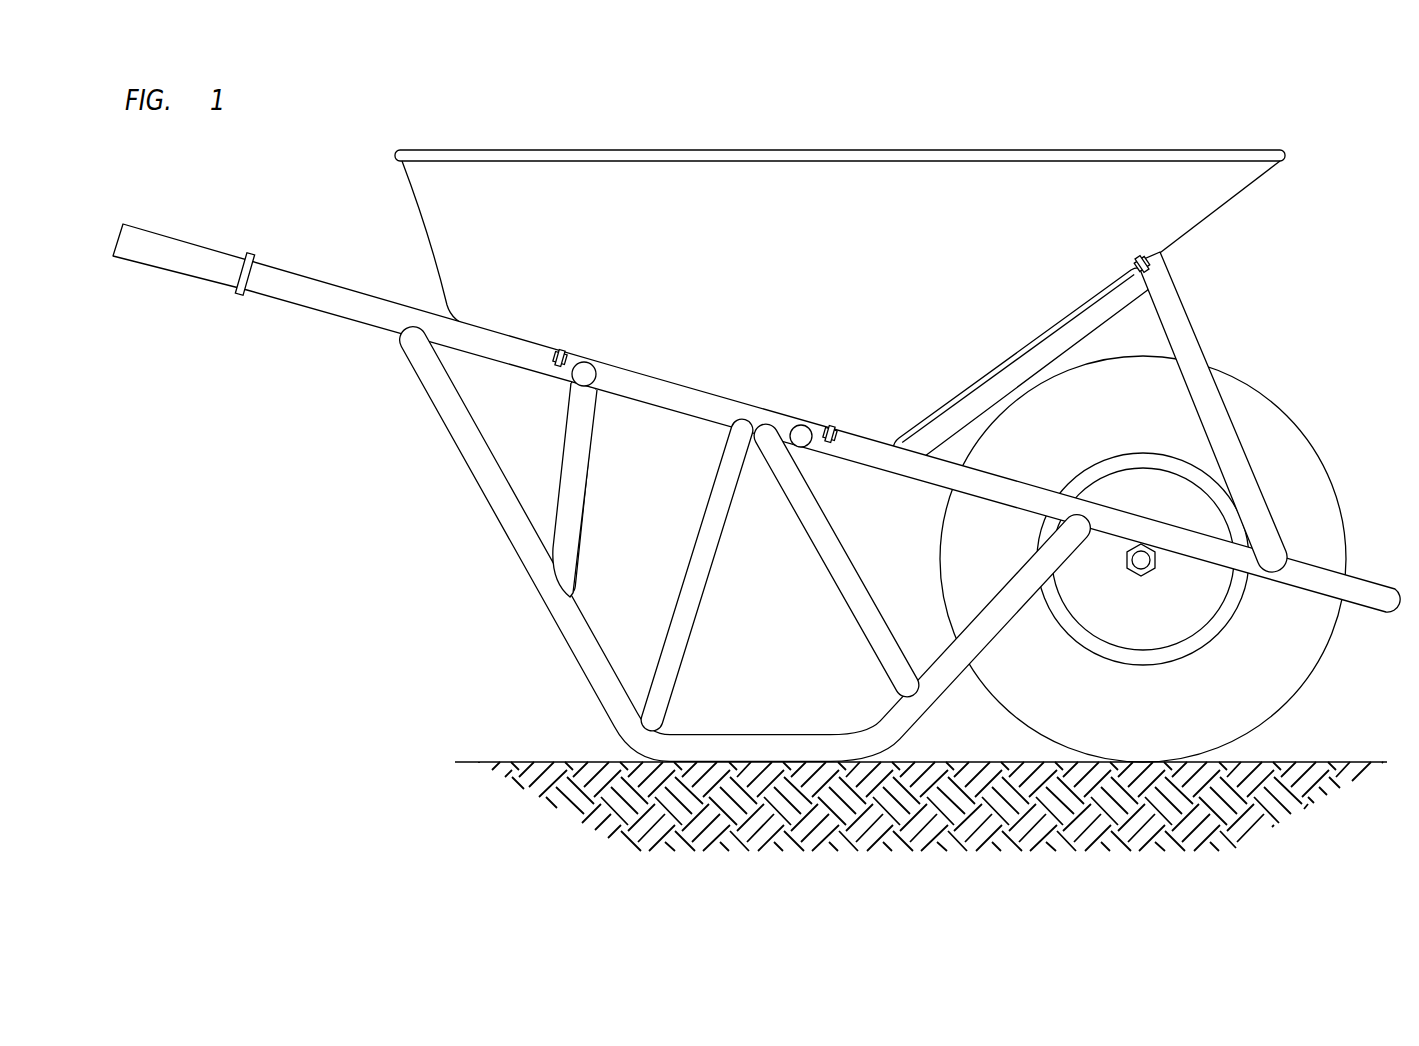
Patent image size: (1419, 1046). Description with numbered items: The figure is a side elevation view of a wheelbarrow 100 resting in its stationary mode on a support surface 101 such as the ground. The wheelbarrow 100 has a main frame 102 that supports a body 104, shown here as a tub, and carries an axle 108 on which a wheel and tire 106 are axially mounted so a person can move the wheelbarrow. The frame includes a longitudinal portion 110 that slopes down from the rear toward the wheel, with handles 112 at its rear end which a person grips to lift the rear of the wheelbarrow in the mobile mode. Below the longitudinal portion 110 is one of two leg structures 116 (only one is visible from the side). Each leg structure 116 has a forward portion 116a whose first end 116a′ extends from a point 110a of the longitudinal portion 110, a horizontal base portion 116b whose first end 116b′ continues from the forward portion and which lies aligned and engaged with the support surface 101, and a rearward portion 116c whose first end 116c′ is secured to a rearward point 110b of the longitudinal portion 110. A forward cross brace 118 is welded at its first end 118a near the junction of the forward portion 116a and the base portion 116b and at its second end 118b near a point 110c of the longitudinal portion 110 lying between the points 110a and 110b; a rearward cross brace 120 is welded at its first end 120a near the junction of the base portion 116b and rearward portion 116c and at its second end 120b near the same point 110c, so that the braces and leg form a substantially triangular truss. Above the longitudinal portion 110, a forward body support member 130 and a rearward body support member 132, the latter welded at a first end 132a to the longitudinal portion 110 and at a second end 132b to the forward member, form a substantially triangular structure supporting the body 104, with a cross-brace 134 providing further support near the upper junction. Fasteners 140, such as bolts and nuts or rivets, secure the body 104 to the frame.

The wheelbarrow 100 is at (345, 160).
The support surface 101 is at (1298, 762).
The main frame 102 is at (430, 408).
The body 104 is at (745, 148).
The wheel and tire 106 is at (1290, 396).
The axle 108 is at (1140, 576).
The longitudinal portion 110 is at (755, 447).
The point 110a is at (1087, 508).
The rearward point 110b is at (412, 322).
The point 110c is at (760, 425).
The handles 112 is at (172, 268).
The leg structure 116 is at (734, 616).
The forward portion 116a is at (953, 644).
The first end 116a′ is at (1072, 532).
The base portion 116b is at (786, 794).
The first end 116b′ is at (845, 750).
The rearward portion 116c is at (531, 544).
The first end 116c′ is at (417, 345).
The forward cross brace 118 is at (821, 568).
The first end 118a is at (895, 677).
The second end 118b is at (770, 452).
The rearward cross brace 120 is at (690, 574).
The first end 120a is at (680, 706).
The second end 120b is at (735, 432).
The forward body support member 130 is at (1180, 327).
The rearward body support member 132 is at (853, 366).
The first end 132a is at (1133, 292).
The second end 132b is at (917, 440).
The cross-brace 134 is at (1158, 252).
The fasteners 140 is at (563, 352).